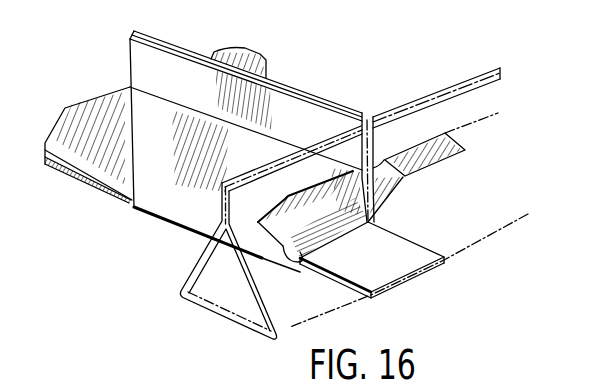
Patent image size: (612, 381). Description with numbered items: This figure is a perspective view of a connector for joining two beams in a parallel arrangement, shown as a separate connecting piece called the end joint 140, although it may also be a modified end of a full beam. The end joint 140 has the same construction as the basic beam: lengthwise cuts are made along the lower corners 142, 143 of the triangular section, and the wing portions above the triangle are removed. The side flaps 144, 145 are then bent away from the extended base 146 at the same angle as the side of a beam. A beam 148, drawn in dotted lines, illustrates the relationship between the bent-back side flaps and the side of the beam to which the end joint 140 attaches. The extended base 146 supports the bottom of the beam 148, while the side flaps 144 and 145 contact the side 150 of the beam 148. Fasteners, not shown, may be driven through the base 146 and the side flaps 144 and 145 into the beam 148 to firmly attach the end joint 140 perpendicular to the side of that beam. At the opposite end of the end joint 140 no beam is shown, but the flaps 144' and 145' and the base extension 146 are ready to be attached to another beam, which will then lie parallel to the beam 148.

The end joint 140 is at (126, 214).
The lower corner of the triangle 142 is at (263, 257).
The lower corner of the triangle 143 is at (370, 222).
The side flap 144 is at (312, 235).
The side flap 144' is at (87, 128).
The side flap 145 is at (438, 155).
The side flap 145' is at (238, 40).
The extended base 146 is at (396, 265).
The beam 148 is at (491, 233).
The side of the beam 150 is at (203, 250).